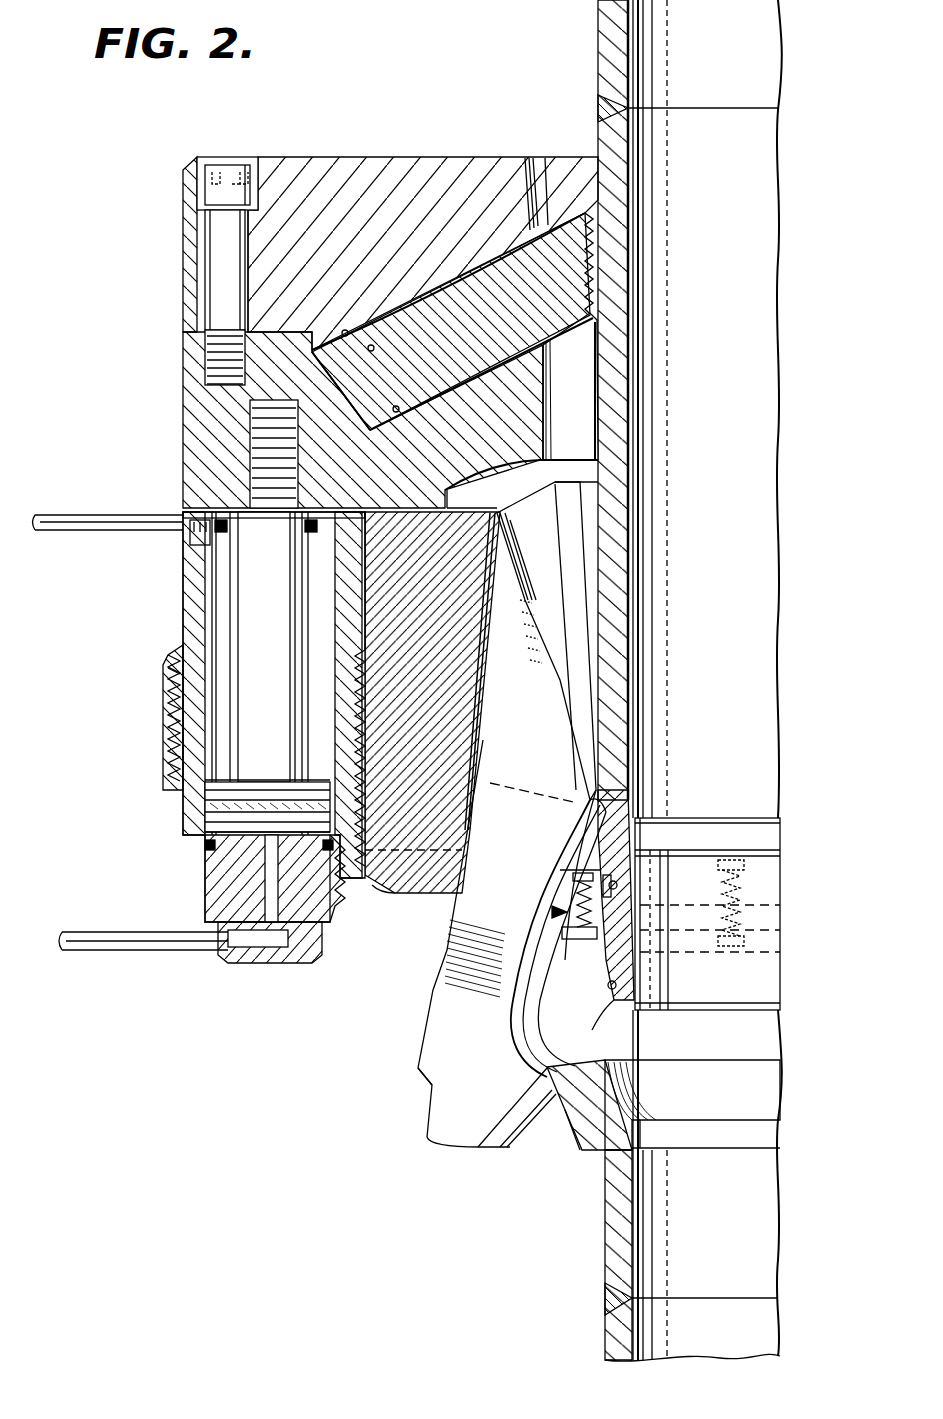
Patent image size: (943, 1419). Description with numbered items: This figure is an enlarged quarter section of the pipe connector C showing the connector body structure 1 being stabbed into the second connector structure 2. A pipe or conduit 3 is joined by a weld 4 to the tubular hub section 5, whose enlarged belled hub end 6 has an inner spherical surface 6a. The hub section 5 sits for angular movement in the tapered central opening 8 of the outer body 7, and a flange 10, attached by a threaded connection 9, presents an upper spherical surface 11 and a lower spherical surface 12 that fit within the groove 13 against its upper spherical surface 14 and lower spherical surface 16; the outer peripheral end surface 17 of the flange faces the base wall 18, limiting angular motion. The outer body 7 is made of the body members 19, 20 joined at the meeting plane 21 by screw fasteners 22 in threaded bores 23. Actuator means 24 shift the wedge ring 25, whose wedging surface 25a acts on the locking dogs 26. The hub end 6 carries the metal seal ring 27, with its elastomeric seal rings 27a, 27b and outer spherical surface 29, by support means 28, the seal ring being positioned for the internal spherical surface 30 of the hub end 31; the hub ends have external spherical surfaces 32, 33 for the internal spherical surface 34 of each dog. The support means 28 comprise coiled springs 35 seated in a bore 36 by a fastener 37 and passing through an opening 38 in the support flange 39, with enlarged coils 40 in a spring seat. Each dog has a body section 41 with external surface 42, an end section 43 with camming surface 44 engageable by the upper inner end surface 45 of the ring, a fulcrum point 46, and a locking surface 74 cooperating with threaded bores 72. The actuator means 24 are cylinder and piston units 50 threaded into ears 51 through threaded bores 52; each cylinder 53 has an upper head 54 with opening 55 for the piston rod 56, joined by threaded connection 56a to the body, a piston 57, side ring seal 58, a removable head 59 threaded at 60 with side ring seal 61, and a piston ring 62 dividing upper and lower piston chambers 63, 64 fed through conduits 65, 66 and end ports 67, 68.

The connector body structure 1 is at (390, 228).
The second connector structure 2 is at (612, 1237).
The pipe or conduit 3 is at (606, 30).
The weld 4 is at (606, 108).
The hub section 5 is at (606, 284).
The belled hub end 6 is at (600, 830).
The inner spherical surface 6a is at (636, 858).
The outer body 7 is at (416, 160).
The central opening 8 is at (532, 192).
The threaded connection 9 is at (605, 234).
The flange 10 is at (451, 321).
The upper spherical surface 11 is at (483, 242).
The lower spherical surface 12 is at (488, 362).
The groove 13 is at (451, 321).
The upper spherical surface 14 is at (345, 330).
The lower spherical surface 16 is at (397, 412).
The outer peripheral end surface 17 is at (372, 345).
The base wall 18 is at (333, 420).
The body member 19 is at (423, 253).
The body member 20 is at (186, 456).
The meeting plane 21 is at (260, 330).
The screw fasteners 22 is at (215, 228).
The threaded bores 23 is at (215, 345).
The actuator means 24 is at (160, 822).
The wedge ring 25 is at (432, 702).
The wedging surface 25a is at (482, 712).
The locking dogs 26 is at (474, 943).
The metal seal ring 27 is at (620, 945).
The elastomeric seal ring 27a is at (616, 884).
The elastomeric seal ring 27b is at (616, 988).
The support means 28 is at (553, 912).
The outer spherical surface 29 is at (640, 896).
The internal spherical surface 30 is at (626, 1112).
The hub end 31 is at (580, 1110).
The external spherical surface 32 is at (557, 820).
The external spherical surface 33 is at (570, 1160).
The internal spherical surface 34 is at (510, 940).
The coiled springs 35 is at (552, 899).
The bore 36 is at (578, 900).
The fastener 37 is at (583, 870).
The opening 38 is at (575, 930).
The support flange 39 is at (505, 990).
The enlarged coils 40 is at (614, 1004).
The body section 41 is at (455, 1095).
The external surface 42 is at (430, 1000).
The end sections 43 is at (535, 517).
The external surfaces 44 is at (505, 565).
The upper inner end surface 45 is at (527, 470).
The fulcrum point 46 is at (590, 800).
The cylinder and piston units 50 is at (238, 698).
The ears 51 is at (166, 712).
The threaded bores 52 is at (180, 672).
The cylinder 53 is at (196, 612).
The upper head 54 is at (325, 540).
The opening 55 is at (232, 545).
The piston rod 56 is at (286, 646).
The threaded connection 56a is at (270, 440).
The piston 57 is at (212, 795).
The side ring seal 58 is at (215, 512).
The removable head 59 is at (300, 942).
The threaded engagement 60 is at (234, 918).
The side ring seal 61 is at (202, 846).
The piston ring 62 is at (225, 803).
The upper piston chamber 63 is at (216, 632).
The lower piston chamber 64 is at (206, 838).
The conduit 65 is at (95, 518).
The conduit 66 is at (150, 950).
The end port 67 is at (205, 540).
The end port 68 is at (272, 883).
The threaded bores 72 is at (402, 903).
The locking surface 74 is at (420, 1086).
The pipe connector C is at (85, 430).